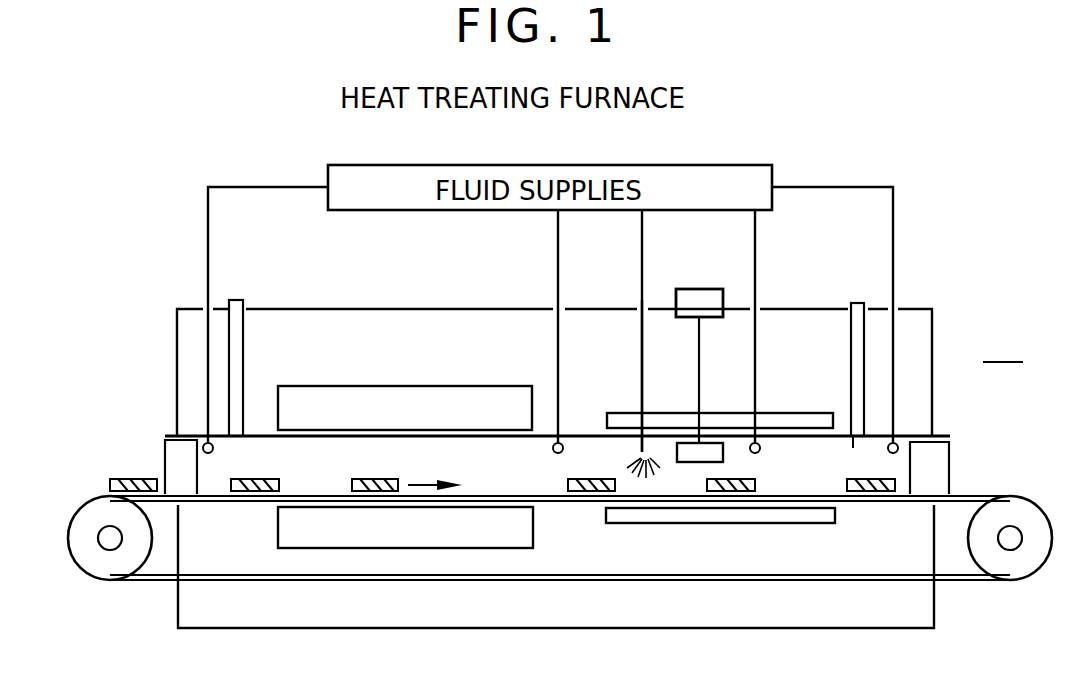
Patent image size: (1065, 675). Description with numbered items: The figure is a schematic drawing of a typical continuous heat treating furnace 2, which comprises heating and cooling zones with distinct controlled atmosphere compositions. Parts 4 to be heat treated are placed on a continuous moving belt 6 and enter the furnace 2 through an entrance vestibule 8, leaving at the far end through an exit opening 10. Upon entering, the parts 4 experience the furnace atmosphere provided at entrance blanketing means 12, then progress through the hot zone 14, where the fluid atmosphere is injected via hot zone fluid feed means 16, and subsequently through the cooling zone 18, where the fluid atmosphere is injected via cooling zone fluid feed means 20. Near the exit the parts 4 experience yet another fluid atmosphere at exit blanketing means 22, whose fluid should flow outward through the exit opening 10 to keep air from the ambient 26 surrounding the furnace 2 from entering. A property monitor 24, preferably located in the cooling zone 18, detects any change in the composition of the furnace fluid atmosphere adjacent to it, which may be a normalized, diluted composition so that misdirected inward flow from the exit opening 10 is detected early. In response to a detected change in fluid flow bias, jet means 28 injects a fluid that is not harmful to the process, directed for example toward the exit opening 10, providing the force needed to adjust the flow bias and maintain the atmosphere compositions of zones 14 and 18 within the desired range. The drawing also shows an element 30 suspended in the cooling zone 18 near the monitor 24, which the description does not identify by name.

The furnace 2 is at (150, 335).
The parts 4 is at (110, 481).
The continuous moving belt 6 is at (70, 520).
The entrance vestibule 8 is at (170, 463).
The exit opening 10 is at (940, 462).
The entrance blanketing means 12 is at (206, 443).
The hot zone 14 is at (452, 456).
The hot zone fluid feed means 16 is at (564, 450).
The cooling zone 18 is at (755, 467).
The cooling zone fluid feed means 20 is at (761, 450).
The exit blanketing means 22 is at (896, 444).
The property monitor 24 is at (676, 447).
The ambient 26 is at (1003, 348).
The jet means 28 is at (645, 402).
The sensor 30 is at (717, 453).